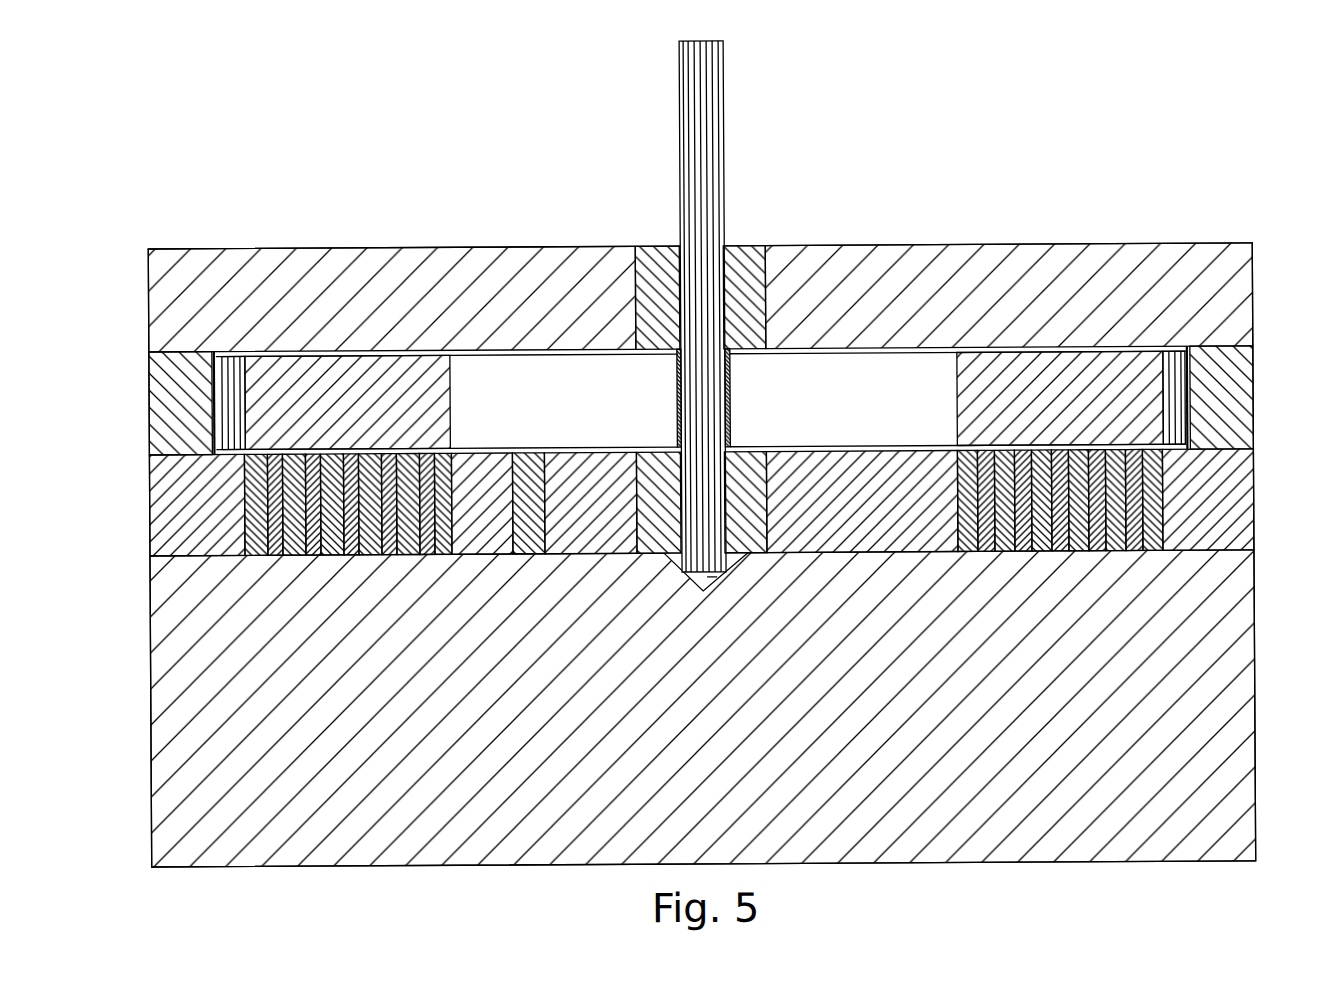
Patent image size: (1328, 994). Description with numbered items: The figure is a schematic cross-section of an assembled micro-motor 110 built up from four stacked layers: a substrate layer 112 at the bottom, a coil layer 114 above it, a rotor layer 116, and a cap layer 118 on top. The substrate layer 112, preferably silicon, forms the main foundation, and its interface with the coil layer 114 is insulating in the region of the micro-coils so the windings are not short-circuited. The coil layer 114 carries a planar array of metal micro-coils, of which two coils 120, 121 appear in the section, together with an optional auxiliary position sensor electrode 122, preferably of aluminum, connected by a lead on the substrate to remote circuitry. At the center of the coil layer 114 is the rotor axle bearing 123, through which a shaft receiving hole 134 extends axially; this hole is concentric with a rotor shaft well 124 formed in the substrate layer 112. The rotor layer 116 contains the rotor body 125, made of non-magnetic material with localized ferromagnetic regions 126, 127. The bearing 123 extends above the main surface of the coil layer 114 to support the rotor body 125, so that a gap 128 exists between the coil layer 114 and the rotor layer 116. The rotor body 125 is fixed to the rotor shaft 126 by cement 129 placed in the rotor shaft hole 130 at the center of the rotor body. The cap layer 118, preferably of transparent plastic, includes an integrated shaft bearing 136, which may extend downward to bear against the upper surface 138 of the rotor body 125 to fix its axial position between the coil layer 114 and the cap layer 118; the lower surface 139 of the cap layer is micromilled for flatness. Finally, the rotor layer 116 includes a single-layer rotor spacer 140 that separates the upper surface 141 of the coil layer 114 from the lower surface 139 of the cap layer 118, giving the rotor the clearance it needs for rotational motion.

The micro-motor 110 is at (1075, 227).
The substrate layer 112 is at (150, 752).
The coil layer 114 is at (150, 496).
The rotor layer 116 is at (150, 398).
The cap layer 118 is at (150, 293).
The micro-coil 120 is at (455, 532).
The micro-coil 121 is at (953, 536).
The auxiliary position sensor electrode 122 is at (553, 472).
The rotor axle bearing 123 is at (768, 547).
The rotor shaft well 124 is at (718, 583).
The rotor body 125 is at (580, 355).
The rotor shaft 126 is at (726, 72).
The ferromagnetic region 127 is at (1076, 352).
The gap 128 is at (603, 450).
The cement 129 is at (731, 386).
The rotor shaft hole 130 is at (678, 360).
The shaft receiving hole 134 is at (758, 528).
The shaft bearing 136 is at (768, 266).
The upper surface 138 is at (886, 352).
The lower surface 139 is at (275, 356).
The rotor spacer 140 is at (1247, 396).
The upper surface 141 is at (878, 450).